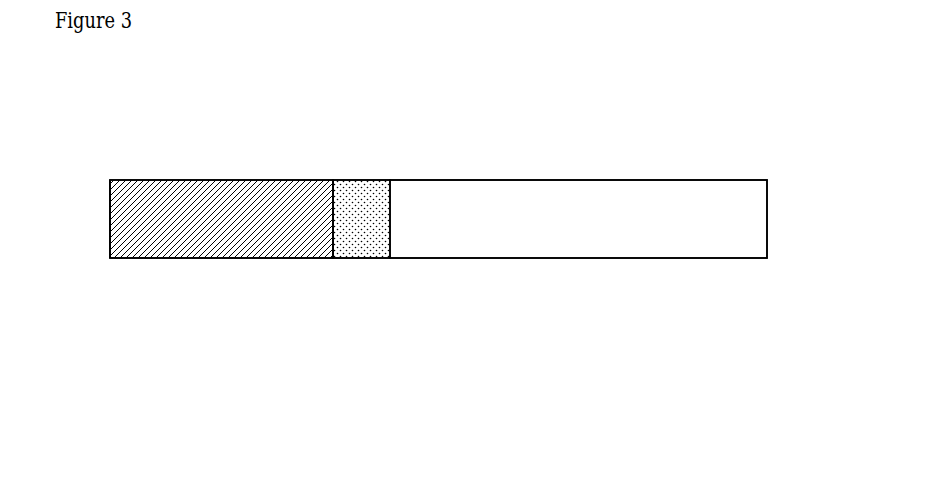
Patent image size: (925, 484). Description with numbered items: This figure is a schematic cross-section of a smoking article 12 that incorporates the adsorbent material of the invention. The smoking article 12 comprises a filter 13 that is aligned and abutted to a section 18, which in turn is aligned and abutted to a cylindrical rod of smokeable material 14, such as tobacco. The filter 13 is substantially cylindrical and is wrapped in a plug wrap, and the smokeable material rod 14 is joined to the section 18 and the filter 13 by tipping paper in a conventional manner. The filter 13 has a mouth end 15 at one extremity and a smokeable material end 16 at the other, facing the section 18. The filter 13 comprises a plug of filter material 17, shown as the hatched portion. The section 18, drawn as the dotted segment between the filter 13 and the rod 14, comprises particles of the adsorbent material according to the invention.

The smoking article 12 is at (418, 304).
The filter 13 is at (216, 253).
The cylindrical rod of smokeable material 14 is at (552, 179).
The mouth end 15 is at (115, 233).
The smokeable material end 16 is at (333, 180).
The plug of filter material 17 is at (192, 203).
The section 18 is at (357, 240).